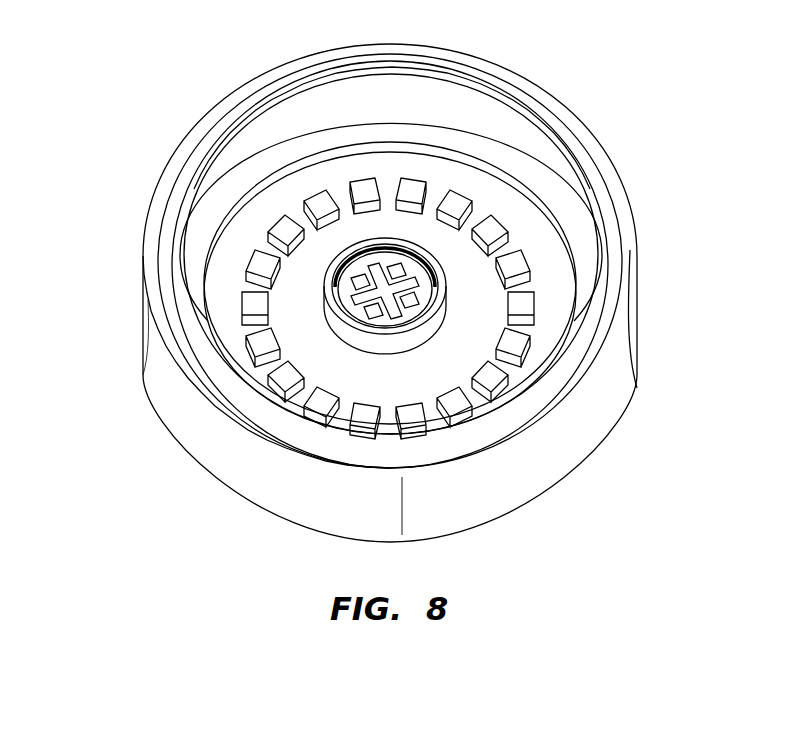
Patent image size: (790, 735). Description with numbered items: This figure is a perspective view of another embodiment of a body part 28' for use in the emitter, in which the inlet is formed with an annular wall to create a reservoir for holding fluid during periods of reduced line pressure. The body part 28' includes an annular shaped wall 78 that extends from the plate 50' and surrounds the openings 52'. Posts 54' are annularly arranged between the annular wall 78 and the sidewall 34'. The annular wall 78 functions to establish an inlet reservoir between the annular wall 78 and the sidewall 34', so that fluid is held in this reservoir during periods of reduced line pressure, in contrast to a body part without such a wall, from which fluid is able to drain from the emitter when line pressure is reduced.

The body part 28' is at (370, 281).
The sidewall 34' is at (390, 281).
The plate 50' is at (321, 288).
The openings 52' is at (531, 272).
The annular shaped wall 78 is at (446, 327).
The posts 54' is at (454, 332).